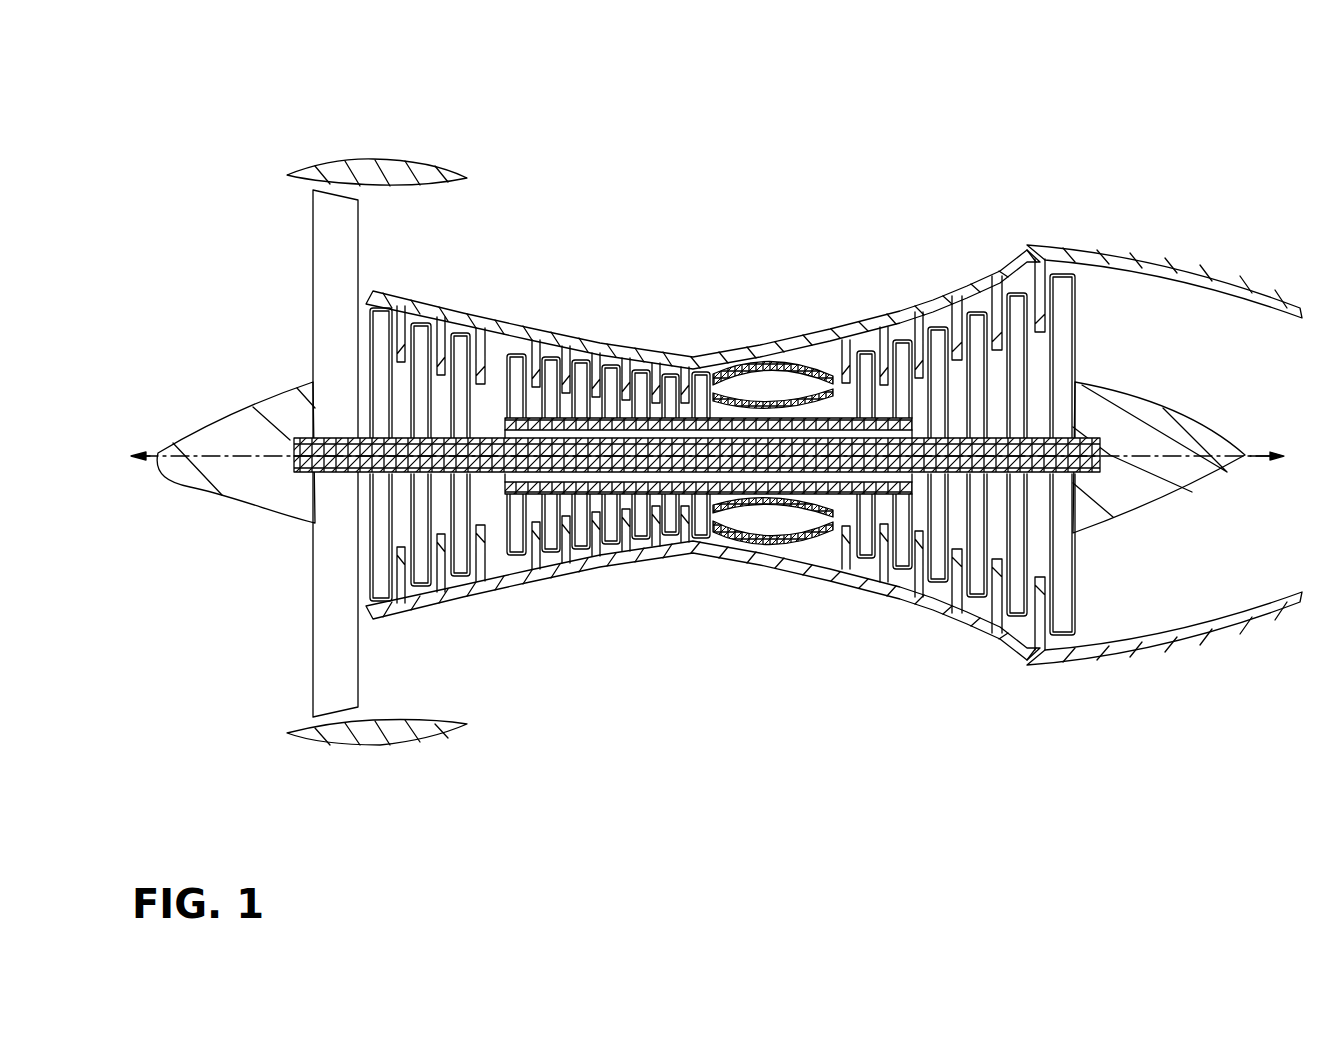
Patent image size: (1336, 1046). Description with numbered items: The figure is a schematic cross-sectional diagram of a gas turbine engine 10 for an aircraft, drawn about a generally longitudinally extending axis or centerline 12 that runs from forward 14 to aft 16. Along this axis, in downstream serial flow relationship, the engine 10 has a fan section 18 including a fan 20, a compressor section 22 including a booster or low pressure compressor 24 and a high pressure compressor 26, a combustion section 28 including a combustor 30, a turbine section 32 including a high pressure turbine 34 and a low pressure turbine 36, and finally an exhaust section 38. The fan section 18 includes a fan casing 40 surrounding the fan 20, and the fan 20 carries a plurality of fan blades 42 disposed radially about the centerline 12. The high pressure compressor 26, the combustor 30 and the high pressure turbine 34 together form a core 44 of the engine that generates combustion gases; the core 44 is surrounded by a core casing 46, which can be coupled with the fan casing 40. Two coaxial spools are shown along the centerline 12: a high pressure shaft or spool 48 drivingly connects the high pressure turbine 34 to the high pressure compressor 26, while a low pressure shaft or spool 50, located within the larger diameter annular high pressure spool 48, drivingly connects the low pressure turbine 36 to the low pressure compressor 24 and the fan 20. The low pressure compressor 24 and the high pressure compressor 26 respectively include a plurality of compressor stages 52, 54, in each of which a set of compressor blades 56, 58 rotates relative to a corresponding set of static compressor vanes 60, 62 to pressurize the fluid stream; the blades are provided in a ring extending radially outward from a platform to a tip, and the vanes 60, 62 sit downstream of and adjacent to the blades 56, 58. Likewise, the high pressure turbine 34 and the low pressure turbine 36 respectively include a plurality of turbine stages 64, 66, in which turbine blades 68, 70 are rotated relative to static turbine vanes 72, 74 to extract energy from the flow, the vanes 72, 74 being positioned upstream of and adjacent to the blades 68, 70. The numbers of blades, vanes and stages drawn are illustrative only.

The gas turbine engine 10 is at (181, 96).
The centerline 12 is at (217, 455).
The forward 14 is at (125, 457).
The aft 16 is at (1281, 457).
The fan section 18 is at (362, 783).
The fan 20 is at (347, 424).
The compressor section 22 is at (365, 783).
The low pressure compressor 24 is at (460, 430).
The high pressure compressor 26 is at (598, 429).
The combustion section 28 is at (857, 783).
The combustor 30 is at (750, 401).
The turbine section 32 is at (1067, 783).
The high pressure turbine 34 is at (872, 425).
The low pressure turbine 36 is at (995, 425).
The exhaust section 38 is at (1070, 783).
The fan casing 40 is at (380, 160).
The fan blades 42 is at (323, 662).
The core 44 is at (913, 657).
The core casing 46 is at (752, 358).
The HP shaft or spool 48 is at (700, 372).
The LP shaft or spool 50 is at (488, 437).
The compressor stages 52 is at (368, 272).
The compressor stages 54 is at (518, 312).
The compressor blades 56 is at (380, 317).
The compressor blades 58 is at (521, 357).
The static compressor vanes 60 is at (403, 337).
The static compressor vanes 62 is at (536, 352).
The turbine stages 64 is at (866, 298).
The turbine stages 66 is at (988, 250).
The turbine blades 68 is at (902, 357).
The turbine blades 70 is at (1017, 310).
The static turbine vanes 72 is at (886, 347).
The static turbine vanes 74 is at (1000, 300).